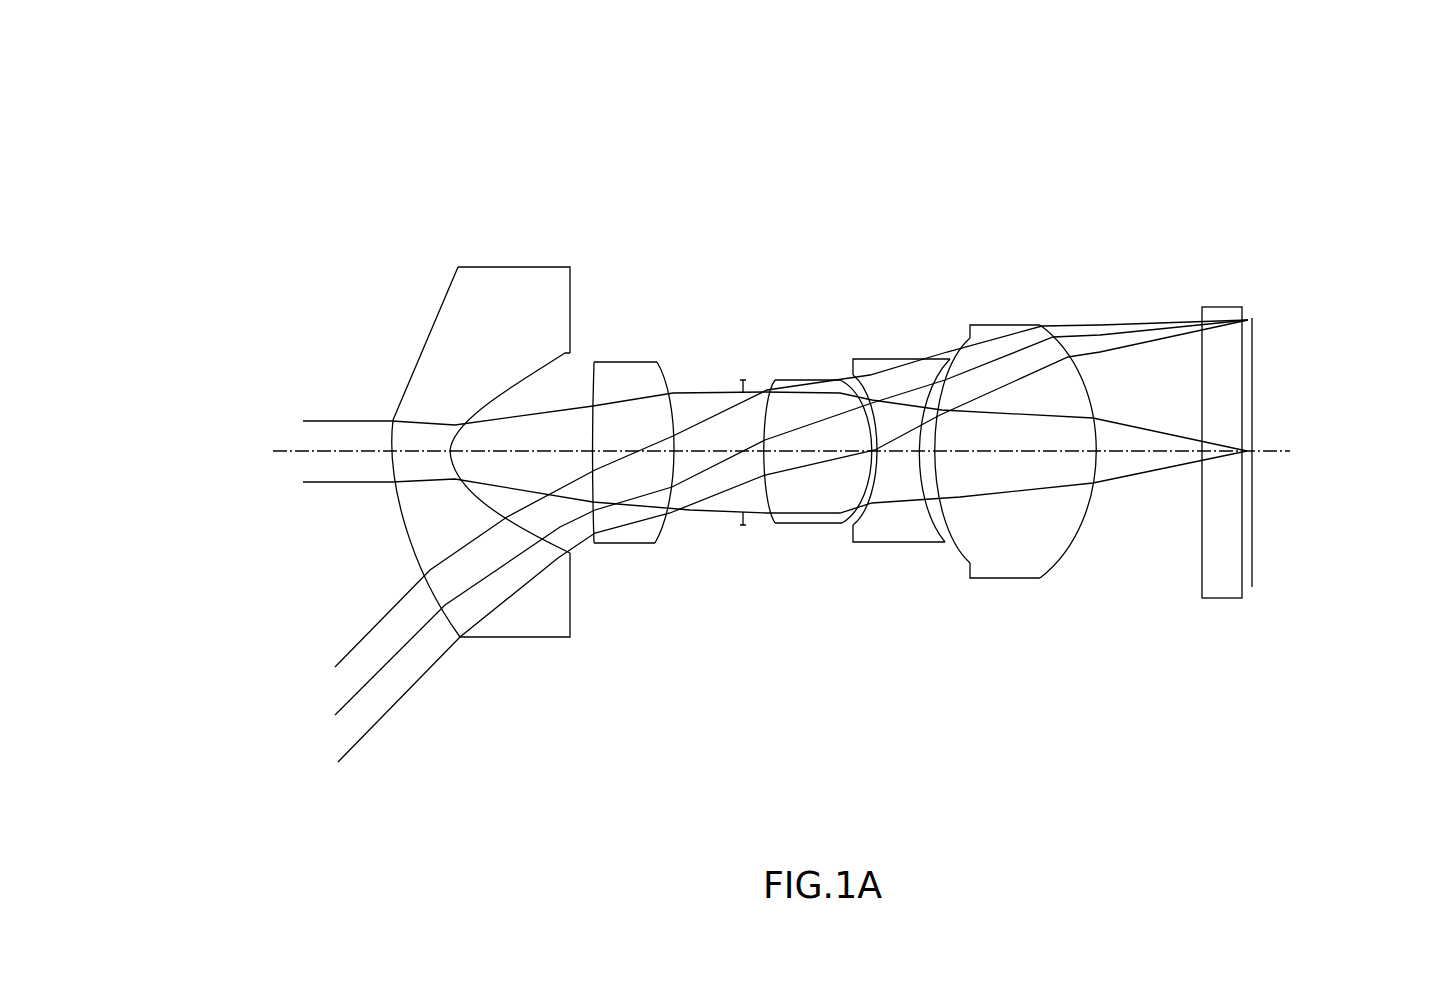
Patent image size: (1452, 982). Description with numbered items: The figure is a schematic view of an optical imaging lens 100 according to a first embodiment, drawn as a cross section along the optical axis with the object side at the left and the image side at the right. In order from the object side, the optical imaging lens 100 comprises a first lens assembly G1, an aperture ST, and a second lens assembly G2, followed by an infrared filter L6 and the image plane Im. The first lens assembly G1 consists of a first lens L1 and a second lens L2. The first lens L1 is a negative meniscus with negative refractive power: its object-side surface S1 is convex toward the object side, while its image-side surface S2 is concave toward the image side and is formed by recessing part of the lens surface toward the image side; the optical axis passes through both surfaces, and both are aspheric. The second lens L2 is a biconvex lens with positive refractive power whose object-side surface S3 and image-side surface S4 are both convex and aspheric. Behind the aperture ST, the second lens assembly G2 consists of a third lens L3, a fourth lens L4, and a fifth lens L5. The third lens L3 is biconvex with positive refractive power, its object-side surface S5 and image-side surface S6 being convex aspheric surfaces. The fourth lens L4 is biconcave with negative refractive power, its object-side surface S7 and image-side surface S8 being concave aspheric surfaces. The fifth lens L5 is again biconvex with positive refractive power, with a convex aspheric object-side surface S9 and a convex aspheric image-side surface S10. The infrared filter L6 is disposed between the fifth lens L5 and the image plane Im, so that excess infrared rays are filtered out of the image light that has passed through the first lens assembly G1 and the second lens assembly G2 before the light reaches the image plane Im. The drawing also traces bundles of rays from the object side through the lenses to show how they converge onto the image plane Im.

The optical imaging lens 100 is at (340, 283).
The first lens assembly G1 is at (455, 157).
The second lens assembly G2 is at (850, 190).
The first lens L1 is at (510, 278).
The second lens L2 is at (633, 367).
The third lens L3 is at (818, 400).
The fourth lens L4 is at (895, 535).
The fifth lens L5 is at (1013, 555).
The infrared filter L6 is at (1223, 310).
The object-side surface of the first lens S1 is at (420, 355).
The image-side surface of the first lens S2 is at (582, 357).
The object-side surface of the second lens S3 is at (584, 543).
The image-side surface of the second lens S4 is at (670, 518).
The object-side surface of the third lens S5 is at (766, 405).
The image-side surface of the third lens S6 is at (884, 372).
The object-side surface of the fourth lens S7 is at (855, 492).
The image-side surface of the fourth lens S8 is at (950, 537).
The object-side surface of the fifth lens S9 is at (947, 365).
The image-side surface of the fifth lens S10 is at (1080, 375).
The aperture ST is at (738, 367).
The image plane Im is at (1252, 372).